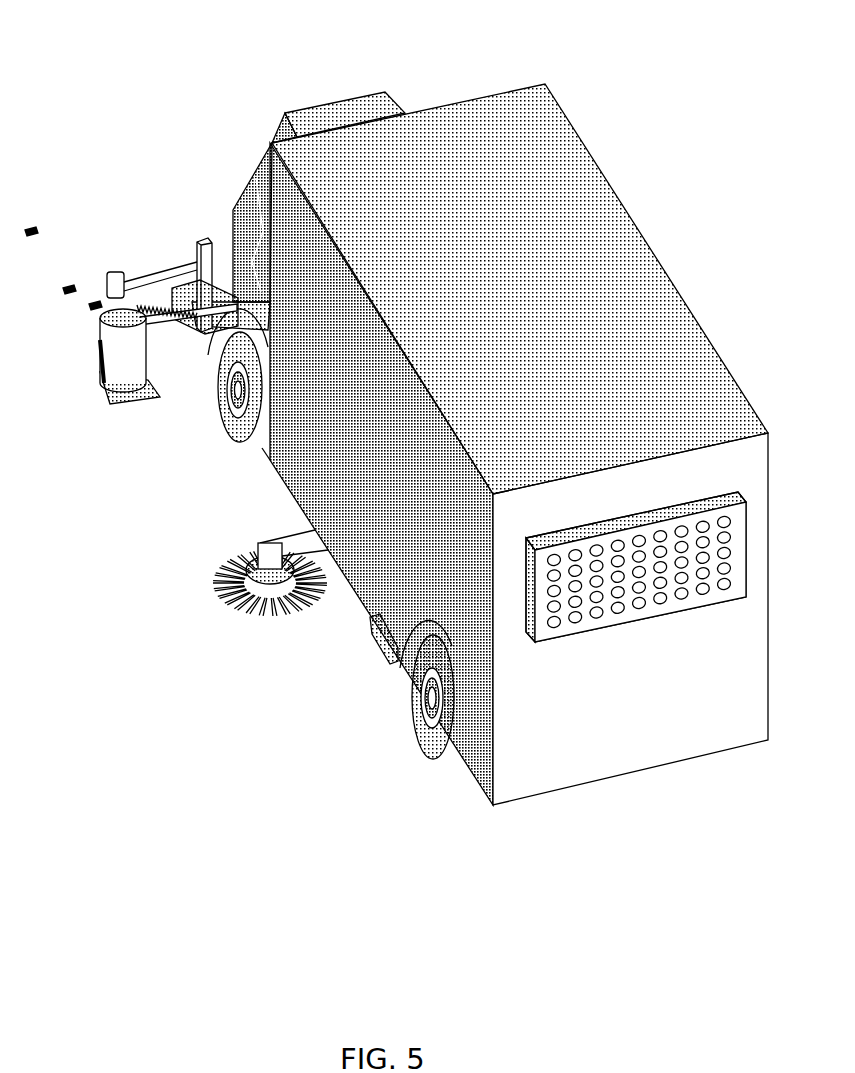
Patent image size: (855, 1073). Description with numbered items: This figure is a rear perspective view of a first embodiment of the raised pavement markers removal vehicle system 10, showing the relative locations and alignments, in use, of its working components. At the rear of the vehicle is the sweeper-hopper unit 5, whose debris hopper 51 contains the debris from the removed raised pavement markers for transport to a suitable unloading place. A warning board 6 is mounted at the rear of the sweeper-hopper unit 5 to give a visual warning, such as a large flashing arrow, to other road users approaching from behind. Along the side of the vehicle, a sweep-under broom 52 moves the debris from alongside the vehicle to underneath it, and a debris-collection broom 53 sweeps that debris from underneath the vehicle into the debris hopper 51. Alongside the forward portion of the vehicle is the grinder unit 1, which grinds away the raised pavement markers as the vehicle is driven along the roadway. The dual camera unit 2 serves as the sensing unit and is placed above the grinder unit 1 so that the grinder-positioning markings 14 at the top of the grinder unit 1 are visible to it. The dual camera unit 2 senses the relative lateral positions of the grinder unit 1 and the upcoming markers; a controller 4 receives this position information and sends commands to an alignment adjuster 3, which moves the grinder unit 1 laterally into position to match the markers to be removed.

The raised pavement markers removal vehicle system 10 is at (176, 42).
The sweeper-hopper unit 5 is at (506, 64).
The debris hopper 51 is at (652, 272).
The warning board 6 is at (740, 512).
The sweep-under broom 52 is at (215, 592).
The debris-collection broom 53 is at (385, 651).
The controller 4 is at (252, 222).
The dual camera unit 2 is at (118, 253).
The alignment adjuster 3 is at (167, 325).
The grinder unit 1 is at (62, 348).
The grinder-positioning markings 14 is at (82, 310).